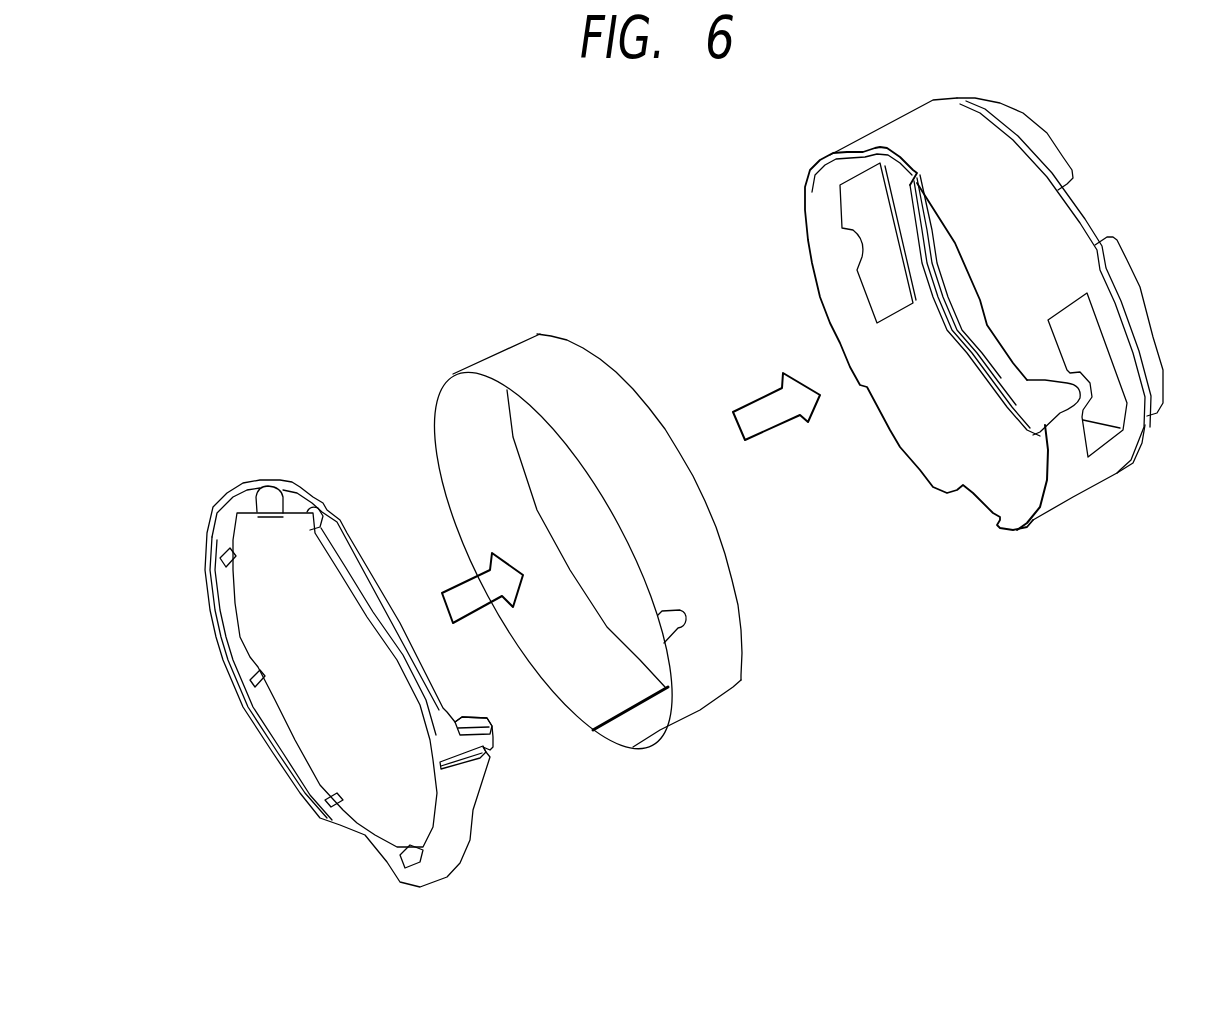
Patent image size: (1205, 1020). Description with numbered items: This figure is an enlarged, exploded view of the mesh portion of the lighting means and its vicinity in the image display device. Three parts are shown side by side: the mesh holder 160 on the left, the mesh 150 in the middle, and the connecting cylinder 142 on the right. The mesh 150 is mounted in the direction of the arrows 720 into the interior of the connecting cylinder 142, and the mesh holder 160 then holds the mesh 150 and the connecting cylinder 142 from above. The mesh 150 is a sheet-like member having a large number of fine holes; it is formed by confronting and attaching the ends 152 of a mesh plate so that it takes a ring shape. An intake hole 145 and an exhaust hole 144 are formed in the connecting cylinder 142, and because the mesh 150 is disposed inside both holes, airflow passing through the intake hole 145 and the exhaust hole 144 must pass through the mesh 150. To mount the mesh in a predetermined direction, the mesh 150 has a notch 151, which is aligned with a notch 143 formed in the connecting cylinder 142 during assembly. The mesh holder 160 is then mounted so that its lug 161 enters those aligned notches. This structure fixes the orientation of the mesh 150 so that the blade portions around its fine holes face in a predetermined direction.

The connecting cylinder 142 is at (984, 356).
The notch 143 is at (1040, 425).
The exhaust hole 144 is at (1097, 425).
The intake hole 145 is at (862, 205).
The mesh 150 is at (611, 538).
The notch 151 is at (685, 625).
The ends 152 is at (620, 713).
The mesh holder 160 is at (377, 623).
The lug 161 is at (484, 748).
The arrows 720 is at (455, 590).